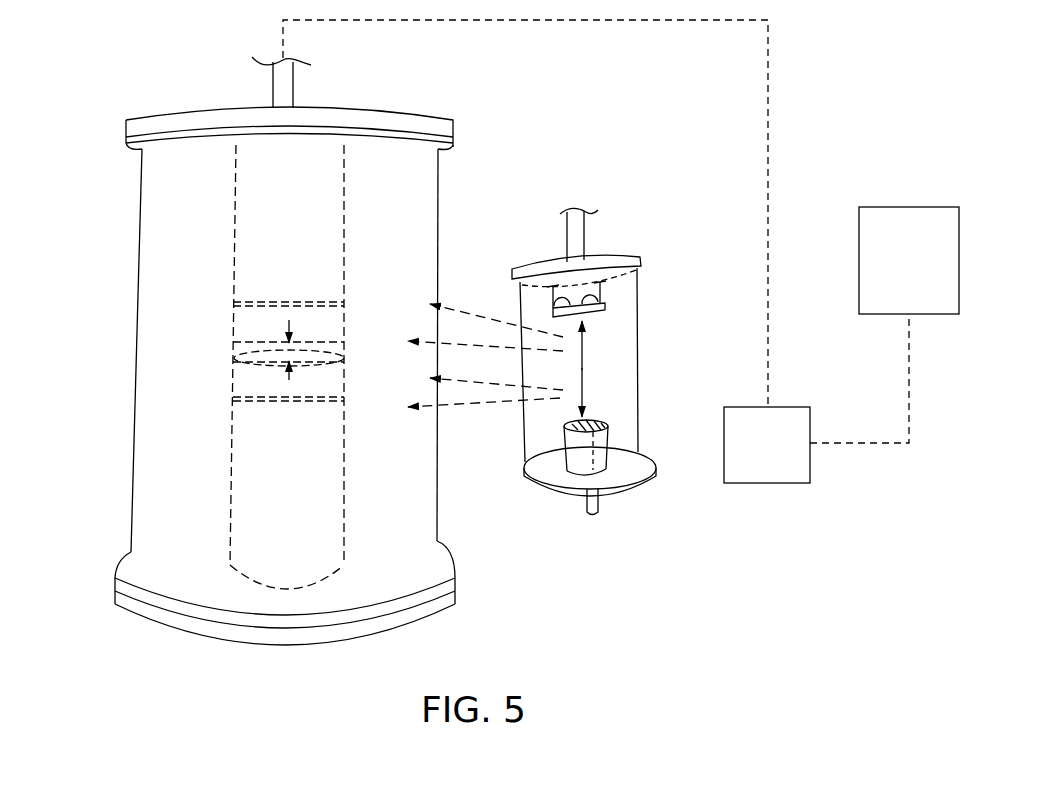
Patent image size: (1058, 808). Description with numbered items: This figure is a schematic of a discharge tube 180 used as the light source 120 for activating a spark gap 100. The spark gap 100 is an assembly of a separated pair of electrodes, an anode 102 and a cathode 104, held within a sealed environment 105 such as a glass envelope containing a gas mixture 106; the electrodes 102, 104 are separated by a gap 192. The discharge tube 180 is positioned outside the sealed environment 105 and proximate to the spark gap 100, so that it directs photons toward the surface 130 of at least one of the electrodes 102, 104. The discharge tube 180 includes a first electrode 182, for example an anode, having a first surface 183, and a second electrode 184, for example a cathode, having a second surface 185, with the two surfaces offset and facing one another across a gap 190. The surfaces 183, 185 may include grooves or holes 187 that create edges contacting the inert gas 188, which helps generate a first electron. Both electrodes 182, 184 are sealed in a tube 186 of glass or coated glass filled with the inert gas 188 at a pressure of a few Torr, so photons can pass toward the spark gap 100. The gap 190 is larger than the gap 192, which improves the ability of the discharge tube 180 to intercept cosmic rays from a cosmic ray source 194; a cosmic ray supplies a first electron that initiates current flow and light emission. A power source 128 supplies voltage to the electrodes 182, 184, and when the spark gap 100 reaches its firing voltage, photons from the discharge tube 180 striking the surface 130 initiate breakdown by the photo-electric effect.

The spark gap 100 is at (286, 351).
The anode 102 is at (250, 378).
The cathode 104 is at (263, 318).
The sealed environment 105 is at (438, 193).
The gas mixture 106 is at (403, 232).
The light source 120 is at (560, 135).
The power source 128 is at (788, 407).
The surface 130 is at (330, 355).
The discharge tube 180 is at (576, 358).
The first electrode 182 is at (614, 489).
The first surface 183 is at (605, 418).
The second electrode 184 is at (640, 268).
The second surface 185 is at (600, 322).
The tube 186 is at (639, 370).
The grooves or holes 187 is at (570, 490).
The inert gas 188 is at (573, 382).
The gap 190 is at (585, 397).
The gap 192 is at (300, 357).
The cosmic ray source 194 is at (907, 207).